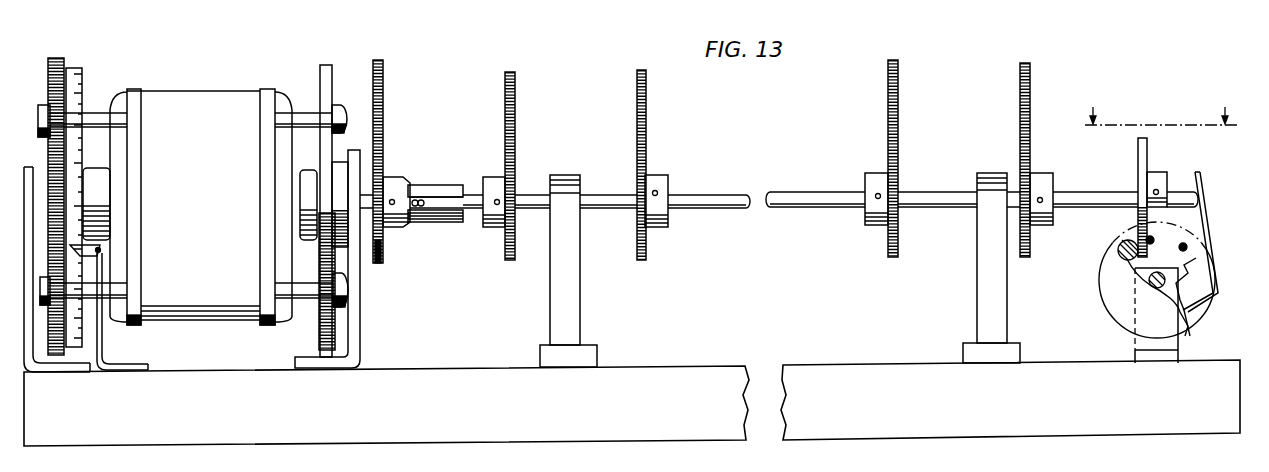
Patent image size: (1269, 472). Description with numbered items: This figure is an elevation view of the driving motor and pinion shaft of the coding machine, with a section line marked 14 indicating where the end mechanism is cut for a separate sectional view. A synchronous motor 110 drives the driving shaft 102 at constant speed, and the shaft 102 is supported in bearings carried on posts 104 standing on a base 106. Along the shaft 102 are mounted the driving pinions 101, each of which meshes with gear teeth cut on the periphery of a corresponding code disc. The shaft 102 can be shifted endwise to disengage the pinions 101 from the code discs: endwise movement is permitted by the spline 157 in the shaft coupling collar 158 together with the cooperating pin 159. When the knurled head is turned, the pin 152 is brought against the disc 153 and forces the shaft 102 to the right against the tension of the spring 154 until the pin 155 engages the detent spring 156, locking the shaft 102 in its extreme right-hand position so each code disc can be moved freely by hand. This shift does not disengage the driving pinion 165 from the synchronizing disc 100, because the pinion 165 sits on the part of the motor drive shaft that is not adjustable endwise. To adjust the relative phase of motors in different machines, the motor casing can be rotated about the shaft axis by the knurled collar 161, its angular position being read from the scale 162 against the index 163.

The synchronizing disc 100 is at (380, 67).
The driving pinion 101 is at (1030, 165).
The driving shaft 102 is at (720, 212).
The post 104 is at (578, 278).
The base 106 is at (673, 365).
The synchronous motor 110 is at (210, 95).
The pin 152 is at (1122, 243).
The disc 153 is at (1138, 158).
The spring 154 is at (1196, 185).
The pin 155 is at (1185, 248).
The detent spring 156 is at (1190, 318).
The spline 157 is at (440, 200).
The shaft coupling collar 158 is at (425, 186).
The cooperating pin 159 is at (420, 207).
The knurled collar 161 is at (48, 76).
The scale 162 is at (72, 68).
The index 163 is at (100, 250).
The driving pinion 165 is at (380, 252).
The section line 14- 14 is at (1161, 109).